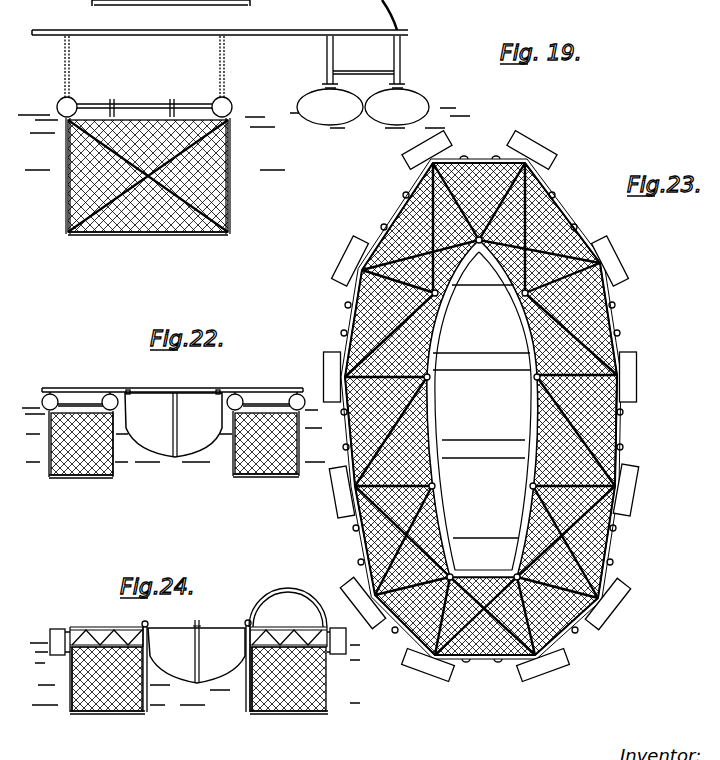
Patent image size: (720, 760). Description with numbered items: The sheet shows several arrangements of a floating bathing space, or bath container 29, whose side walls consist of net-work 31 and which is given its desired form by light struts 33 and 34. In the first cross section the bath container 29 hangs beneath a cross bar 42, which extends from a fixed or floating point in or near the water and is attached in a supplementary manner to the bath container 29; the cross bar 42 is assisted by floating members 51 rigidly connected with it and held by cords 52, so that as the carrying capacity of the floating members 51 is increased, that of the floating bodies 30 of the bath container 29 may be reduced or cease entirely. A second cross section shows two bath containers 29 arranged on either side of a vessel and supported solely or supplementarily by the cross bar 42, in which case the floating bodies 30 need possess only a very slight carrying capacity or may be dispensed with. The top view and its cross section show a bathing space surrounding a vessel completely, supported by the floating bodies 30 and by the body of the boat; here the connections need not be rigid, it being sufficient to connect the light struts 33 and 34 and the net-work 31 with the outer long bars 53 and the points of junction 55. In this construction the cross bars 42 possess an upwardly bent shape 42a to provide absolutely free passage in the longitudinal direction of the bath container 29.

In FIG. 19, the bath container 29 is at (67, 198).
In FIG. 22, the bath container 29 is at (51, 476).
In FIG. 24, the bath container 29 is at (72, 713).
In FIG. 23, the bath container 29 is at (617, 433).
In FIG. 19, the floating bodies 30 is at (76, 102).
In FIG. 22, the floating bodies 30 is at (52, 393).
In FIG. 24, the floating bodies 30 is at (57, 628).
In FIG. 23, the floating bodies 30 is at (540, 155).
In FIG. 23, the net-work 31 is at (545, 212).
In FIG. 19, the strut 33 is at (229, 218).
In FIG. 22, the strut 33 is at (233, 446).
In FIG. 24, the strut 33 is at (250, 690).
In FIG. 19, the strut 34 is at (240, 6).
In FIG. 22, the strut 34 is at (290, 478).
In FIG. 24, the strut 34 is at (140, 713).
In FIG. 19, the cross bar 42 is at (119, 37).
In FIG. 22, the cross bar 42 is at (245, 387).
In FIG. 24, the cross bar 42 is at (98, 630).
In FIG. 23, the cross bar 42 is at (433, 200).
In FIG. 24, the upwardly bent shape 42a is at (290, 588).
In FIG. 19, the floating members 51 is at (312, 93).
In FIG. 19, the cords 52 is at (384, 15).
In FIG. 24, the outer long bars 53 is at (71, 628).
In FIG. 23, the outer long bars 53 is at (612, 323).
In FIG. 24, the points of junction 55 is at (246, 622).
In FIG. 23, the points of junction 55 is at (479, 244).